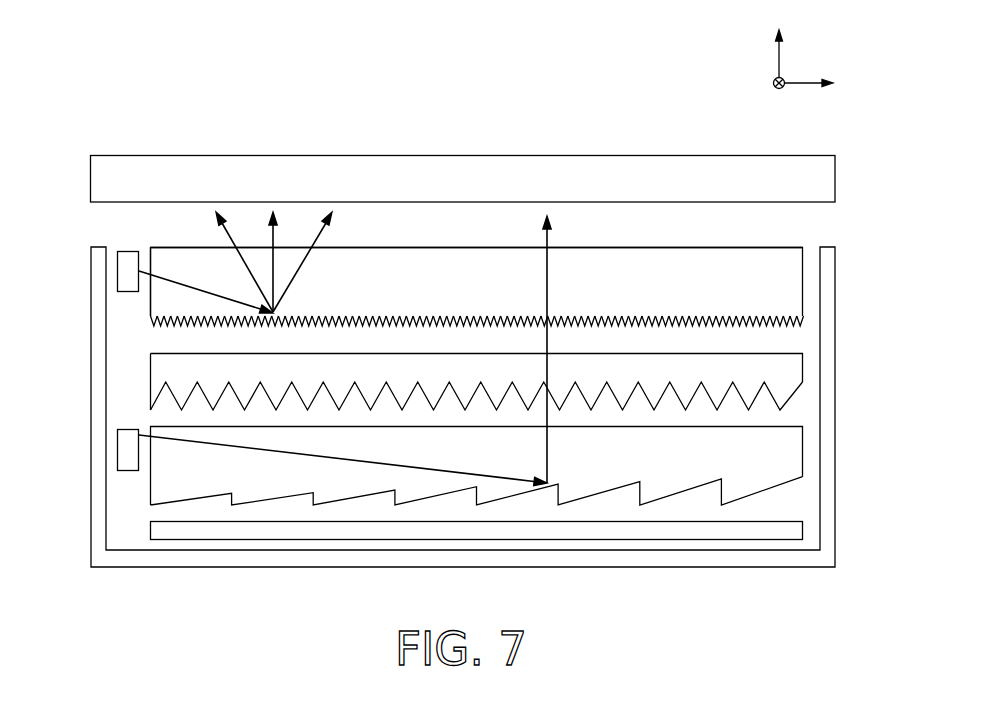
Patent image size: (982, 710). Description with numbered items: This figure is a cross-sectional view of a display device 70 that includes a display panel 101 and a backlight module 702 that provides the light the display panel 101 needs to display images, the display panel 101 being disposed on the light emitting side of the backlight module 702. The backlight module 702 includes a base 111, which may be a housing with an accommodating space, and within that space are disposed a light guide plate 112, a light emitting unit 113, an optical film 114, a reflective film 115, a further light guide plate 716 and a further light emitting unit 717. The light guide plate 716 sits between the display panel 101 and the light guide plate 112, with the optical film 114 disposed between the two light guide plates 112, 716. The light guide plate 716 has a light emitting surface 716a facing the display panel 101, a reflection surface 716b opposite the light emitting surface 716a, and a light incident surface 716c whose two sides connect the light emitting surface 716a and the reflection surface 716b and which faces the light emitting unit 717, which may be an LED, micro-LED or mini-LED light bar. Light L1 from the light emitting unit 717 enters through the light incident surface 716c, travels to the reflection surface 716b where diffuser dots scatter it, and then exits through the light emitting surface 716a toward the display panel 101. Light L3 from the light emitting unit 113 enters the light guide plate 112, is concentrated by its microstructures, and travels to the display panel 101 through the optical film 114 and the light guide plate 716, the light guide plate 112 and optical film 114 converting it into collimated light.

The display device 70 is at (88, 116).
The display panel 101 is at (822, 175).
The backlight module 702 is at (846, 261).
The light guide plate 716 is at (782, 287).
The light emitting surface 716a is at (641, 235).
The reflection surface 716b is at (604, 334).
The light incident surface 716c is at (145, 306).
The light emitting unit 717 is at (130, 260).
The light L1 is at (207, 292).
The optical film 114 is at (165, 368).
The light emitting unit 113 is at (130, 458).
The light guide plate 112 is at (790, 462).
The light L3 is at (417, 467).
The reflective film 115 is at (165, 530).
The base 111 is at (827, 435).